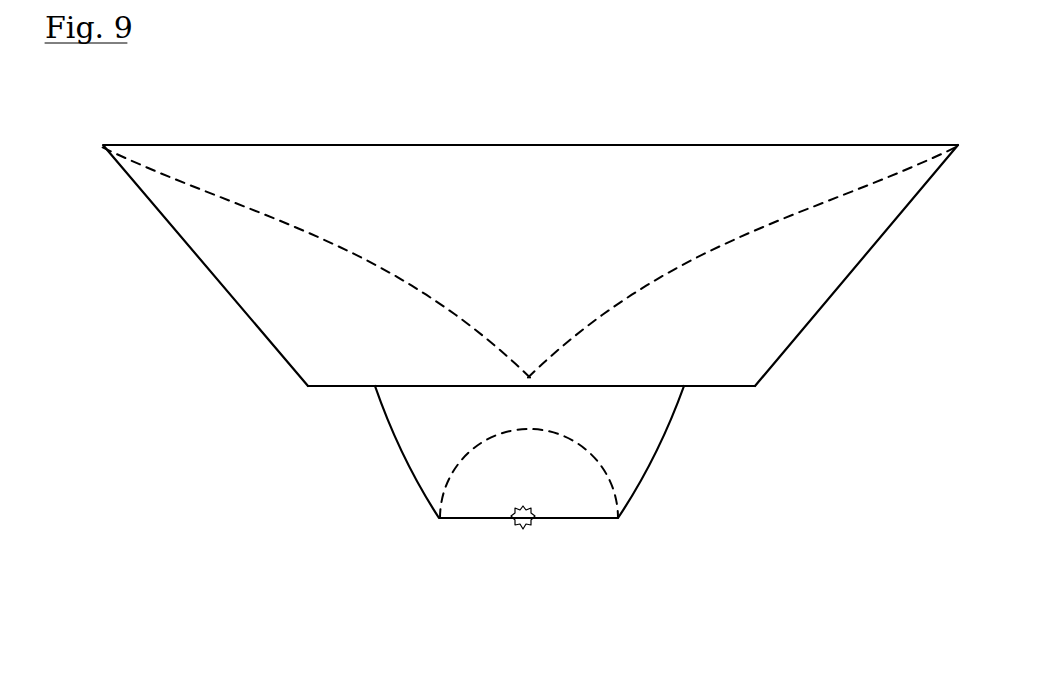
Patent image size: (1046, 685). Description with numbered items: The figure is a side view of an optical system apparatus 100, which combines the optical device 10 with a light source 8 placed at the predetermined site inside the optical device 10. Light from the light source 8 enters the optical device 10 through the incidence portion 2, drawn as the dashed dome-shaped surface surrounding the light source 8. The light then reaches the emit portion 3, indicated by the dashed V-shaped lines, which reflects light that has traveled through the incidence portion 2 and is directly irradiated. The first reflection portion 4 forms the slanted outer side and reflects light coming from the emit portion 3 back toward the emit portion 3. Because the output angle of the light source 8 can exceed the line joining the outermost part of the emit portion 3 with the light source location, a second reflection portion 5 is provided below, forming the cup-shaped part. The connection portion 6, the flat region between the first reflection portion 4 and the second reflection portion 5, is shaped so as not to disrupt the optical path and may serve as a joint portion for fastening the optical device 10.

The optical system apparatus 100 is at (118, 114).
The optical device 10 is at (258, 283).
The emit portion 3 is at (703, 251).
The first reflection portion 4 is at (828, 298).
The connection portion 6 is at (715, 386).
The second reflection portion 5 is at (647, 480).
The incidence portion 2 is at (605, 476).
The light source 8 is at (520, 522).